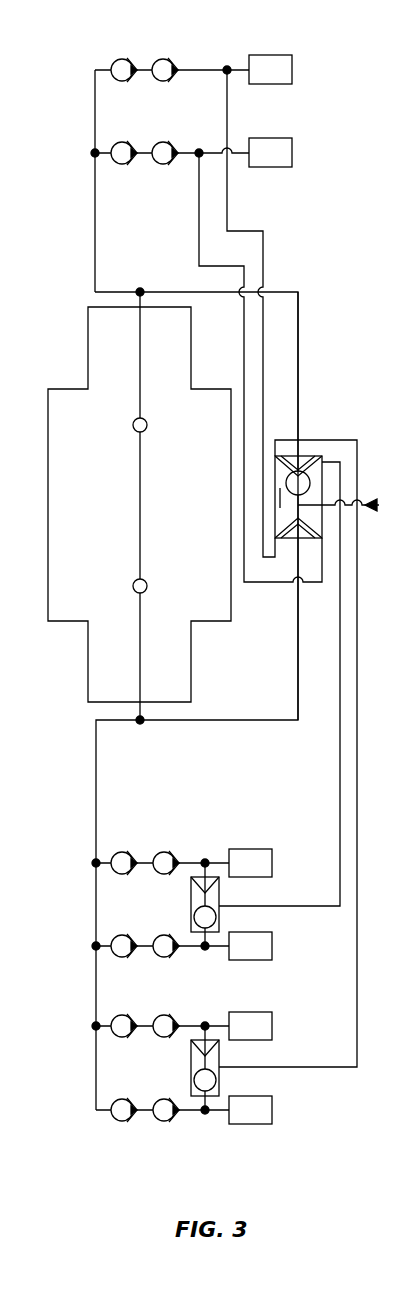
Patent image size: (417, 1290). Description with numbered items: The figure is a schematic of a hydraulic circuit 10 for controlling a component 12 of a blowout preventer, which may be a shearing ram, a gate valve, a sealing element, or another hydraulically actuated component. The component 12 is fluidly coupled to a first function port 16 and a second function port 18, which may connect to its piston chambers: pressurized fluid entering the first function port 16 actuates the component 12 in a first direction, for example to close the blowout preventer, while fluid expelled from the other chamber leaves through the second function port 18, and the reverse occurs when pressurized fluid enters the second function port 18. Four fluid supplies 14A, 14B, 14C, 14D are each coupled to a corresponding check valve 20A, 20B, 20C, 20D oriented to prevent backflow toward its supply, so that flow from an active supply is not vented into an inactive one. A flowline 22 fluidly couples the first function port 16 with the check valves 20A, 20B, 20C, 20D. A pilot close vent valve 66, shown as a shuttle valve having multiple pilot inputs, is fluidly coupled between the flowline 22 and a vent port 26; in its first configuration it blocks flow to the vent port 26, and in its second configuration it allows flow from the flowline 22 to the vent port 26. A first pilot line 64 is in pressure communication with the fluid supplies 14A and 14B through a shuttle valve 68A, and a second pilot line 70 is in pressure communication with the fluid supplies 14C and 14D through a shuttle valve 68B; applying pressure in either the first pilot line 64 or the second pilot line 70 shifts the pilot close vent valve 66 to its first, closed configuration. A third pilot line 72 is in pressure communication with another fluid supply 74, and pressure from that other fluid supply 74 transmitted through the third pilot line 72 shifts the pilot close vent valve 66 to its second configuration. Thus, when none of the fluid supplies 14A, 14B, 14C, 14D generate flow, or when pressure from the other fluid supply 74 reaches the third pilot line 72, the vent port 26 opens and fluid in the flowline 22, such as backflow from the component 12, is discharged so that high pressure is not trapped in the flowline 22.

The hydraulic circuit 10 is at (134, 40).
The component 12 is at (47, 505).
The fluid supply 14A is at (250, 849).
The fluid supply 14B is at (272, 945).
The fluid supply 14C is at (272, 1029).
The fluid supply 14D is at (250, 1125).
The first function port 16 is at (140, 578).
The second function port 18 is at (140, 433).
The check valve 20A is at (123, 852).
The check valve 20B is at (124, 935).
The check valve 20C is at (124, 1015).
The check valve 20D is at (127, 1121).
The flowline 22 is at (95, 802).
The vent port 26 is at (381, 505).
The first pilot line 64 is at (338, 742).
The pilot close vent valve 66 is at (308, 455).
The shuttle valve 68A is at (220, 897).
The shuttle valve 68B is at (220, 1075).
The second pilot line 70 is at (358, 657).
The third pilot line 72 is at (198, 233).
The other fluid supply 74 is at (293, 152).